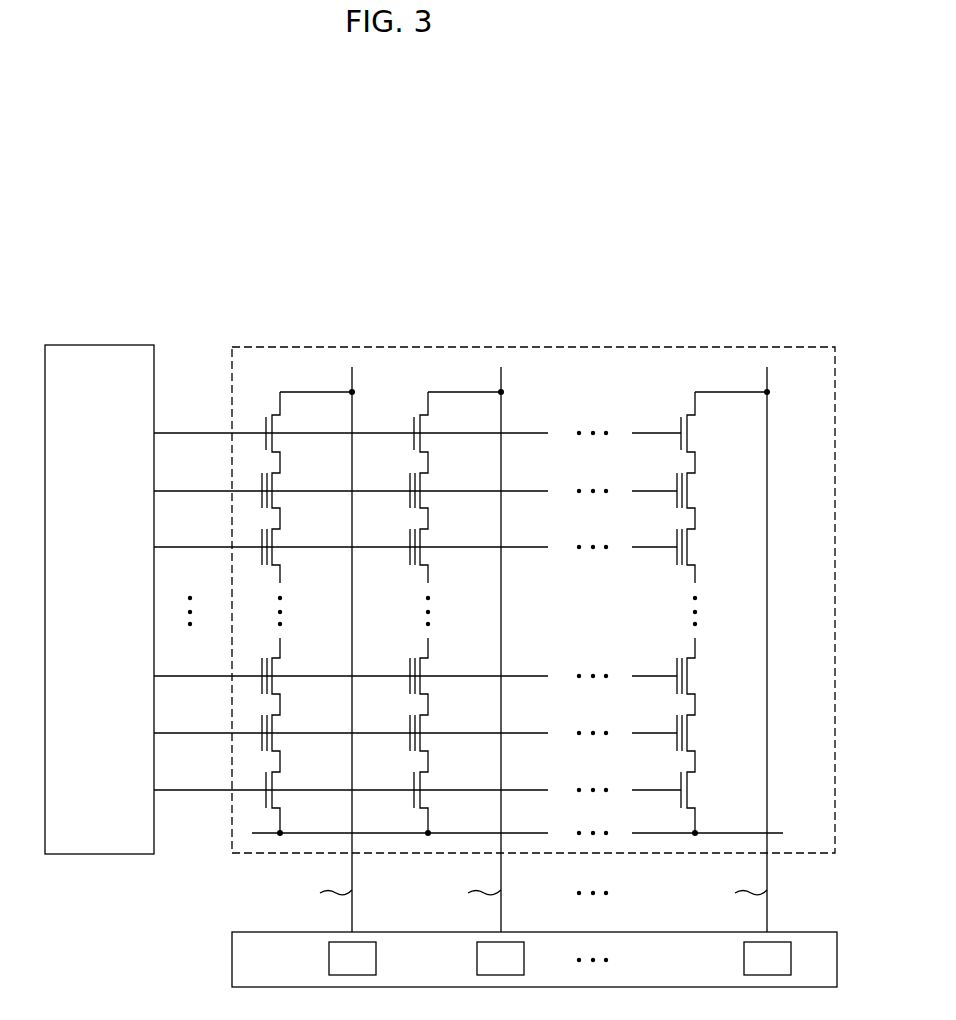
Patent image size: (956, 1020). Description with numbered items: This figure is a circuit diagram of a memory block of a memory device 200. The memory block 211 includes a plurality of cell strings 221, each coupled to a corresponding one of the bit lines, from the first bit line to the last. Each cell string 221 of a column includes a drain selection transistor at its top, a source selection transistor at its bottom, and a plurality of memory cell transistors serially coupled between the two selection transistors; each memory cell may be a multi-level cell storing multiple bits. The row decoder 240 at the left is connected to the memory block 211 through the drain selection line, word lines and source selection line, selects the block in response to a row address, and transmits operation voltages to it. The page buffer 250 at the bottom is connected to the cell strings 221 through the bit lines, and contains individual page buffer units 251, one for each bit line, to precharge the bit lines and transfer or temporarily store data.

The memory device 200 is at (782, 258).
The memory block 211 is at (733, 346).
The cell string 221 is at (267, 388).
The row decoder 240 is at (100, 343).
The page buffer 250 is at (232, 960).
The page buffer 251 is at (329, 960).